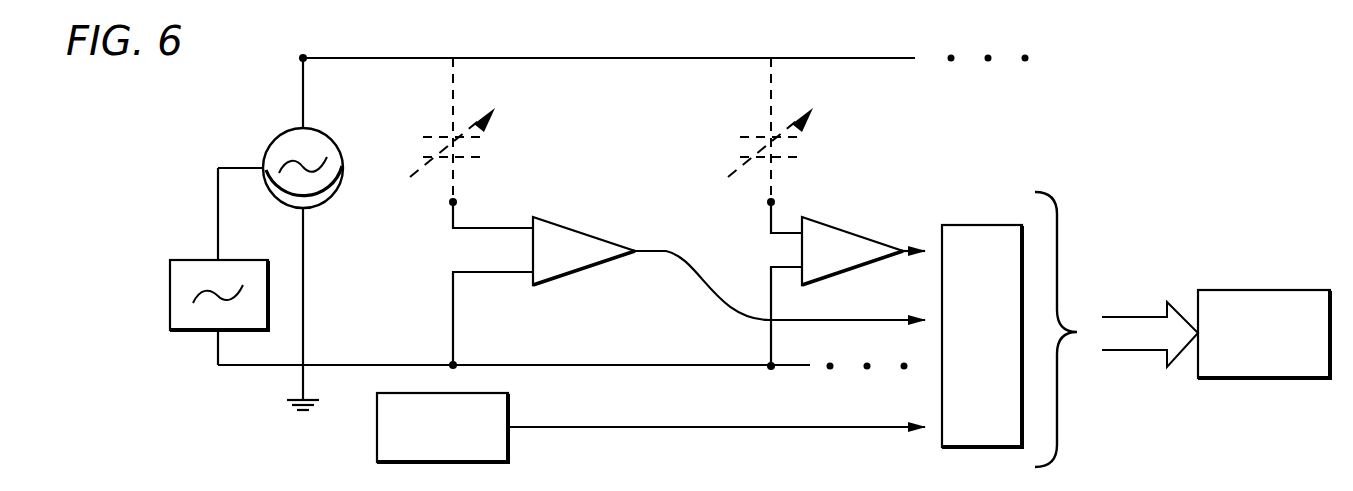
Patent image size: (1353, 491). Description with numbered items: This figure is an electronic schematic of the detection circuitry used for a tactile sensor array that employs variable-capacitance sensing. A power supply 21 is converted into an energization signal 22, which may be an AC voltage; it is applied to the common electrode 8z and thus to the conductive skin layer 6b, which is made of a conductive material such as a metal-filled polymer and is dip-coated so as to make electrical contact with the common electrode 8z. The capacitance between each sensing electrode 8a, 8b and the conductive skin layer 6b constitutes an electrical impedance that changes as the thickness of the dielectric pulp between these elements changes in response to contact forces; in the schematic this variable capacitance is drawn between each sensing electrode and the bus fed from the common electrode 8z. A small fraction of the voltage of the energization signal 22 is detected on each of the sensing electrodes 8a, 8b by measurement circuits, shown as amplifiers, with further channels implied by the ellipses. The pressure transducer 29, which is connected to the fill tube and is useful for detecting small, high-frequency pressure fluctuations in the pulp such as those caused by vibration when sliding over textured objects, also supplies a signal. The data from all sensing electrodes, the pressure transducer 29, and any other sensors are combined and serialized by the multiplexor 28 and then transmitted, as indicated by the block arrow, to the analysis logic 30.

The conductive skin layer 6b is at (666, 43).
The common electrode 8z is at (287, 85).
The sensing electrode 8a is at (491, 276).
The sensing electrode 8b is at (788, 279).
The power supply 21 is at (160, 297).
The energization signal 22 is at (282, 118).
The multiplexor 28 is at (1003, 212).
The pressure transducer 29 is at (365, 432).
The analysis logic 30 is at (1256, 278).